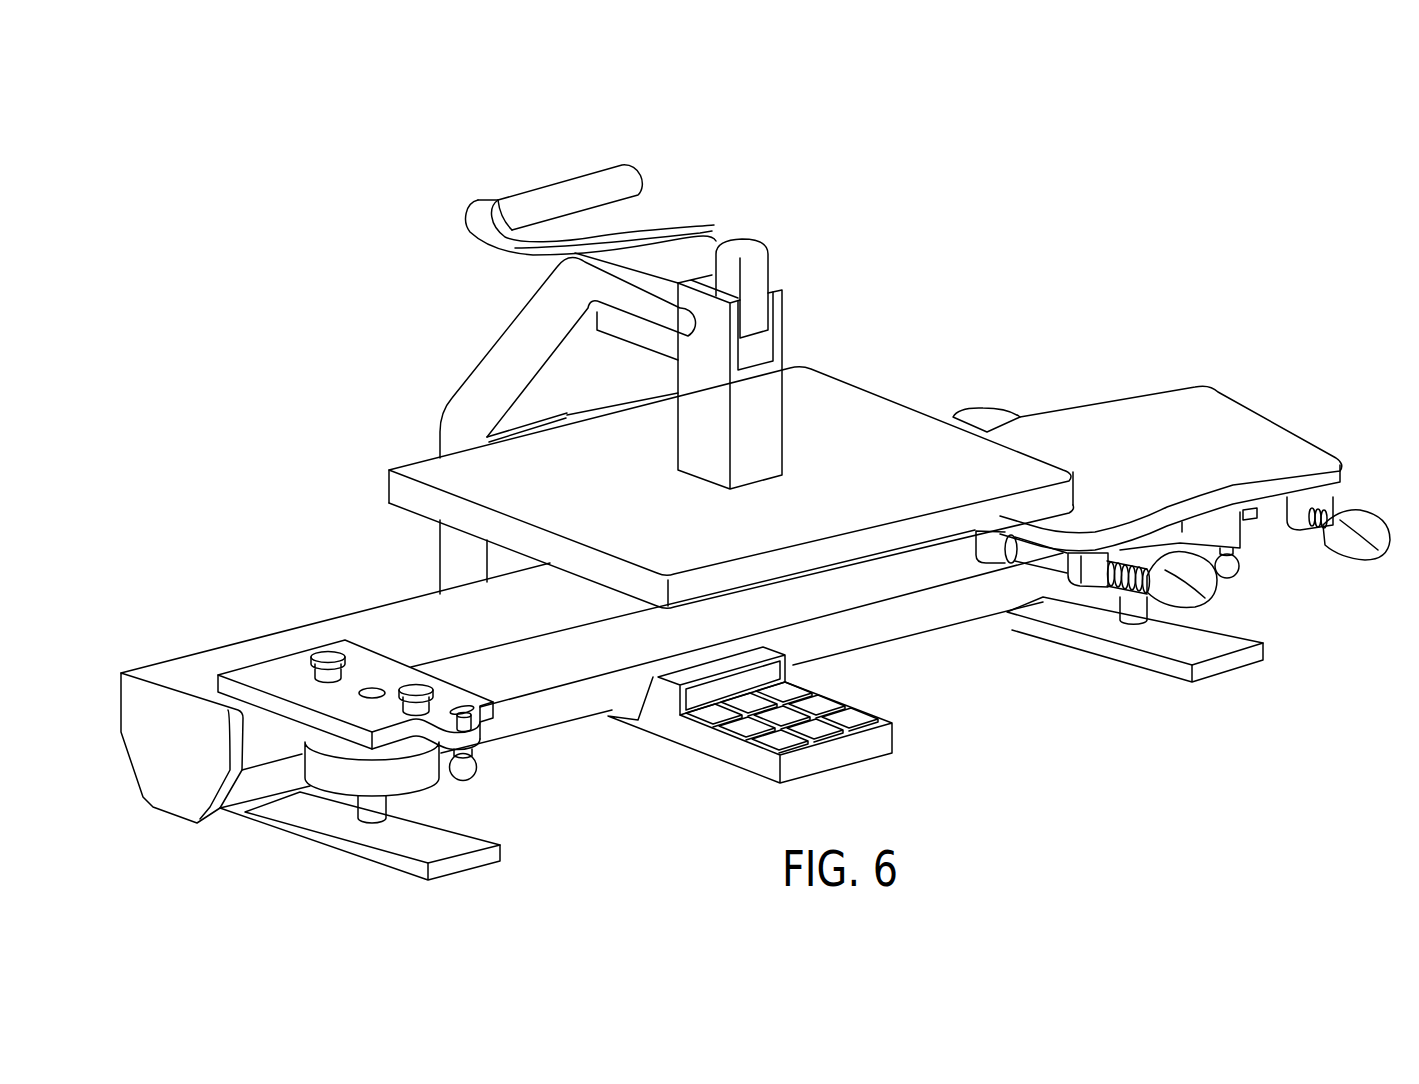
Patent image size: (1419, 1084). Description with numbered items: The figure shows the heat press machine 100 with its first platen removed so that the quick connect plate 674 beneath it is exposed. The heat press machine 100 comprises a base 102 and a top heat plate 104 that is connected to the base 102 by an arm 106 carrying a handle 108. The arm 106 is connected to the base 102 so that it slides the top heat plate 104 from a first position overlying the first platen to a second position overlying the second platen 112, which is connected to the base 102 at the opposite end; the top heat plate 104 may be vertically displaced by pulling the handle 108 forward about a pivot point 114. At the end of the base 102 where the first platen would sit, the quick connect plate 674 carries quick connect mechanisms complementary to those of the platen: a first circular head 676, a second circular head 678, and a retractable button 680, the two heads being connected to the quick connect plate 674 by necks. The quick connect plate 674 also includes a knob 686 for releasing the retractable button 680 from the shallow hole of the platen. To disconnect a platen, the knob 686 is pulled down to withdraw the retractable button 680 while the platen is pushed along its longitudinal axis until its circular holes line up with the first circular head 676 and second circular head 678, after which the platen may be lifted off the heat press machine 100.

The heat press machine 100 is at (882, 334).
The base 102 is at (928, 617).
The top heat plate 104 is at (910, 423).
The arm 106 is at (510, 355).
The handle 108 is at (564, 192).
The second platen 112 is at (1133, 379).
The pivot point 114 is at (763, 272).
The quick connect plate 674 is at (360, 660).
The first circular head 676 is at (326, 655).
The second circular head 678 is at (419, 687).
The retractable button 680 is at (464, 711).
The knob 686 is at (478, 766).